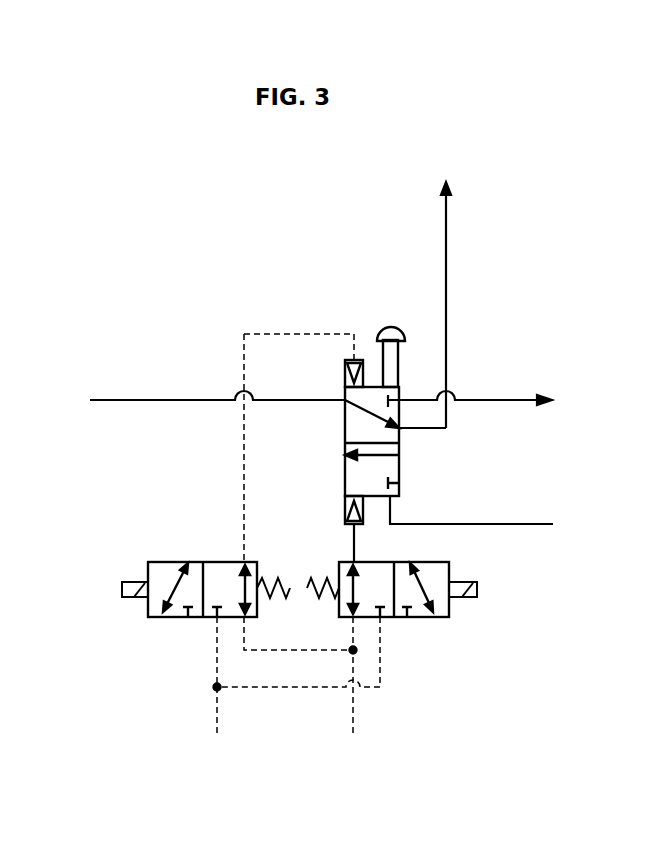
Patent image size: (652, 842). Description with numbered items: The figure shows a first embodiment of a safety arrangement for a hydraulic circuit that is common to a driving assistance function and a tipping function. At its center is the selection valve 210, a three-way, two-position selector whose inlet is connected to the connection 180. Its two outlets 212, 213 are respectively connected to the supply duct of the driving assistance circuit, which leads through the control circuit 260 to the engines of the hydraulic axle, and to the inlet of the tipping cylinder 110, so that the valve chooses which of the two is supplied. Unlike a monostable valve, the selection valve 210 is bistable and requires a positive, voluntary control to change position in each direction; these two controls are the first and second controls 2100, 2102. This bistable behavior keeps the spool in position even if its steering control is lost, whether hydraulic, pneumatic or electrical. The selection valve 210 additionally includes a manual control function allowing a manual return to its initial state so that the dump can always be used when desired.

The tipping cylinder 110 is at (447, 181).
The connection 180 is at (91, 400).
The control circuit 260 is at (552, 400).
The selection valve 210 is at (328, 444).
The first outlet of the selector 212 is at (412, 399).
The second outlet of the selector 213 is at (412, 430).
The first control 2100 is at (196, 634).
The second control 2102 is at (402, 636).